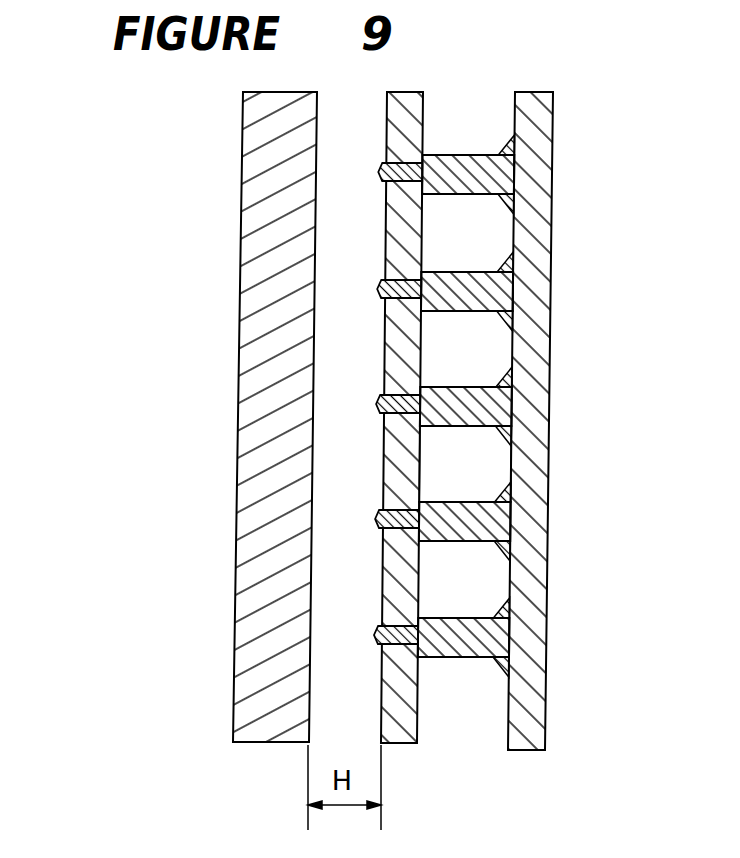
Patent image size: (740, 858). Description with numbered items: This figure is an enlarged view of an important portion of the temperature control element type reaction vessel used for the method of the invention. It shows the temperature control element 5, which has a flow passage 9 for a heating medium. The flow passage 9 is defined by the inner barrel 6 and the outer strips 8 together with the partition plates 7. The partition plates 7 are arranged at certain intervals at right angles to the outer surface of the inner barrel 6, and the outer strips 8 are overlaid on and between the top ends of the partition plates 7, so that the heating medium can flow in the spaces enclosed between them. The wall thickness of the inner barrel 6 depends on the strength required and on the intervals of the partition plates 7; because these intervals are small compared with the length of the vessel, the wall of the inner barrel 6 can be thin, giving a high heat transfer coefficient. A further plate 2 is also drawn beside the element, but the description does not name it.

The substrate plate 2 is at (247, 417).
The temperature control element 5 is at (560, 364).
The inner barrel 6 is at (555, 421).
The partition plates 7 is at (466, 367).
The outer strips 8 is at (378, 417).
The flow passage 9 is at (508, 464).